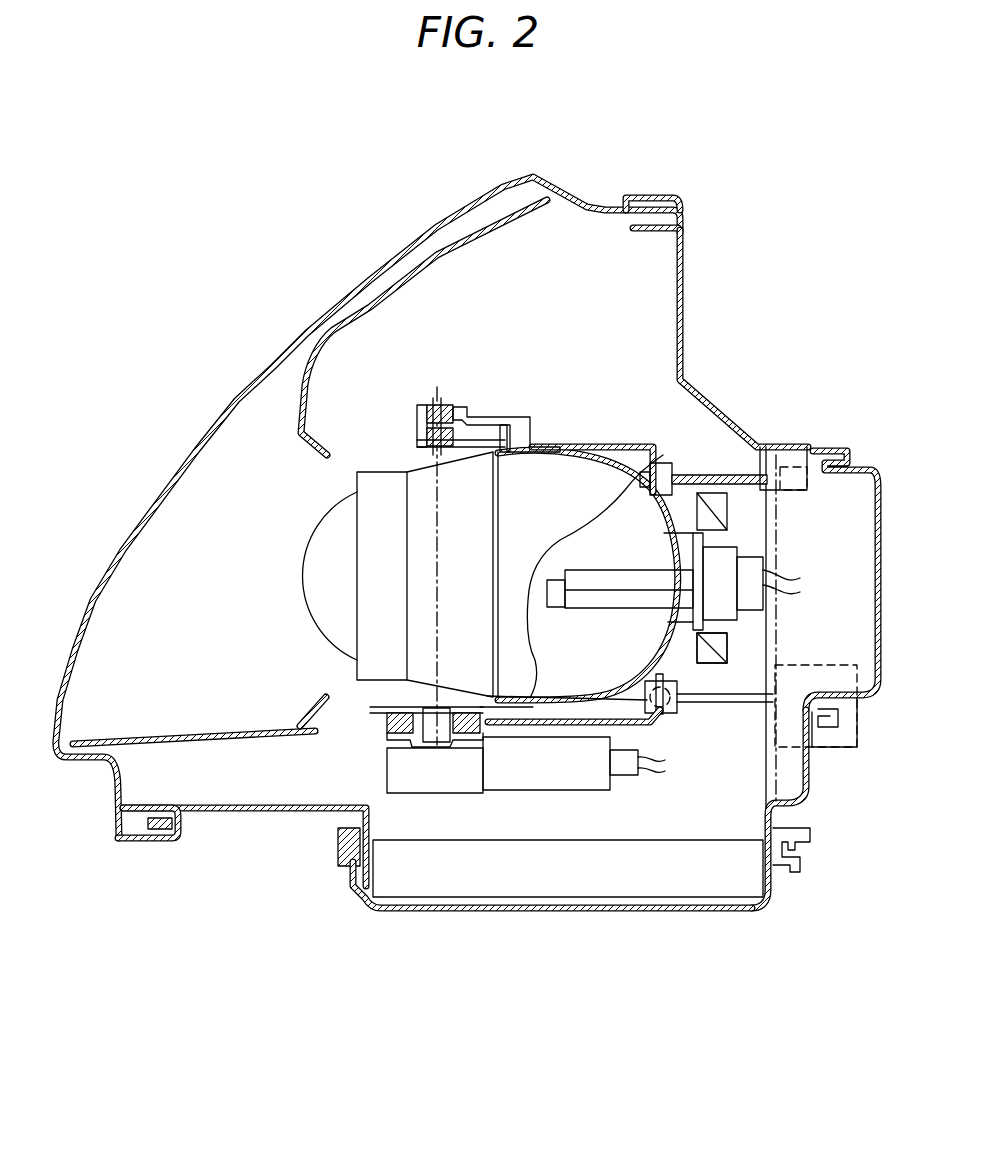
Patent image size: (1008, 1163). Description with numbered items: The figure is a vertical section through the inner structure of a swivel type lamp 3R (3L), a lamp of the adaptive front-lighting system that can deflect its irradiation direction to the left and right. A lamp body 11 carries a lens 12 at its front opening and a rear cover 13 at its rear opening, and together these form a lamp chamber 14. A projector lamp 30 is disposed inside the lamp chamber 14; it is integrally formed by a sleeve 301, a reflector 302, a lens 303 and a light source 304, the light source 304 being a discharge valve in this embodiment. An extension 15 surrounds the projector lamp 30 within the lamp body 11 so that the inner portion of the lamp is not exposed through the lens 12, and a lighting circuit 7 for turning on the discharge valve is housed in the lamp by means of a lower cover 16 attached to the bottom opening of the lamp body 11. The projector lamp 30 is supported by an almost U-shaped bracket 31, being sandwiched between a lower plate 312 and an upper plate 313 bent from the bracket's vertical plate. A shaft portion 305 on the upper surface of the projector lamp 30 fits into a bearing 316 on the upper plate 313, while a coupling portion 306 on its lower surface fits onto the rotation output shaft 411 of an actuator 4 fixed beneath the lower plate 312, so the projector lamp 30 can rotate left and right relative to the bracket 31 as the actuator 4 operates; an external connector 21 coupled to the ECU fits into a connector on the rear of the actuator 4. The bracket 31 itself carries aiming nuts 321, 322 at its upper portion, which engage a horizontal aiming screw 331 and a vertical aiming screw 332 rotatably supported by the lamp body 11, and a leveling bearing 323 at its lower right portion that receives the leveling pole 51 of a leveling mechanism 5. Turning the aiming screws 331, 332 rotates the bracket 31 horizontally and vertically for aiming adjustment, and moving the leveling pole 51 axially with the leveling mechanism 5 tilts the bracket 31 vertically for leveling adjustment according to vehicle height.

The swivel type lamp 3R is at (685, 115).
The swivel type lamp 3L is at (633, 147).
The lamp body 11 is at (688, 304).
The lens 12 is at (362, 293).
The rear cover 13 is at (872, 468).
The lamp chamber 14 is at (198, 618).
The extension 15 is at (257, 743).
The lower cover 16 is at (527, 912).
The external connector 21 is at (630, 762).
The projector lamp 30 is at (287, 545).
The bracket 31 is at (657, 462).
The sleeve 301 is at (508, 424).
The reflector 302 is at (607, 480).
The lens 303 is at (333, 622).
The light source 304 is at (598, 590).
The shaft portion 305 is at (420, 405).
The coupling portion 306 is at (372, 722).
The lower plate 312 is at (526, 733).
The upper plate 313 is at (490, 412).
The bearing 316 is at (440, 398).
The aiming nut 321 is at (685, 462).
The aiming nut 322 is at (685, 462).
The leveling bearing 323 is at (668, 715).
The horizontal aiming screw 331 is at (800, 594).
The vertical aiming screw 332 is at (793, 478).
The actuator 4 is at (398, 776).
The rotation output shaft 411 is at (433, 745).
The leveling mechanism 5 is at (840, 748).
The leveling pole 51 is at (723, 703).
The lighting circuit 7 is at (640, 887).